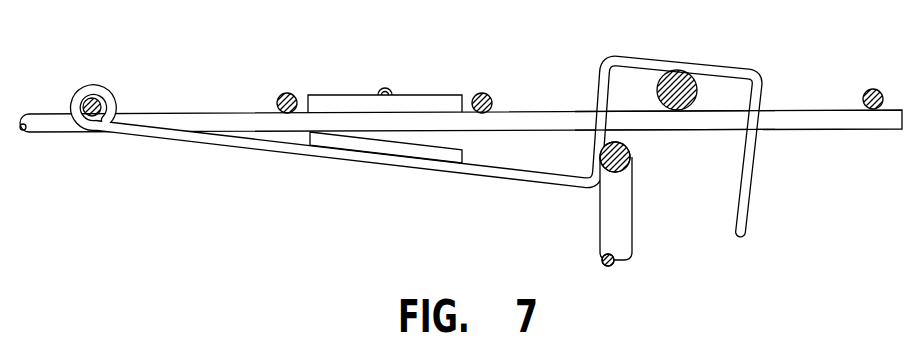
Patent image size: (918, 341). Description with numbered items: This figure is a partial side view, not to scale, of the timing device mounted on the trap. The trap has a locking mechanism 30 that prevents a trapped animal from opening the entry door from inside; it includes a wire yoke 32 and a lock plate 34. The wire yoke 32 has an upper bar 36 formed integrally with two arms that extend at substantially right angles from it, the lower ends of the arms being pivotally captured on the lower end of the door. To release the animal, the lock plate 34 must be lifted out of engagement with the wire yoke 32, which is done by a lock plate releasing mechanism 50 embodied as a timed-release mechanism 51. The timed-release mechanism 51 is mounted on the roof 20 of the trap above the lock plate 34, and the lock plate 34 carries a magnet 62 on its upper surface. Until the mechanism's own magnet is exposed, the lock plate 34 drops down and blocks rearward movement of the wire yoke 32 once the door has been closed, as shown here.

The roof 20 is at (188, 121).
The locking mechanism 30 is at (667, 220).
The wire yoke 32 is at (622, 217).
The lock plate 34 is at (528, 183).
The upper bar 36 is at (627, 154).
The lock plate releasing mechanism 50 is at (453, 90).
The timed-release mechanism 51 is at (352, 93).
The magnet 62 is at (376, 150).